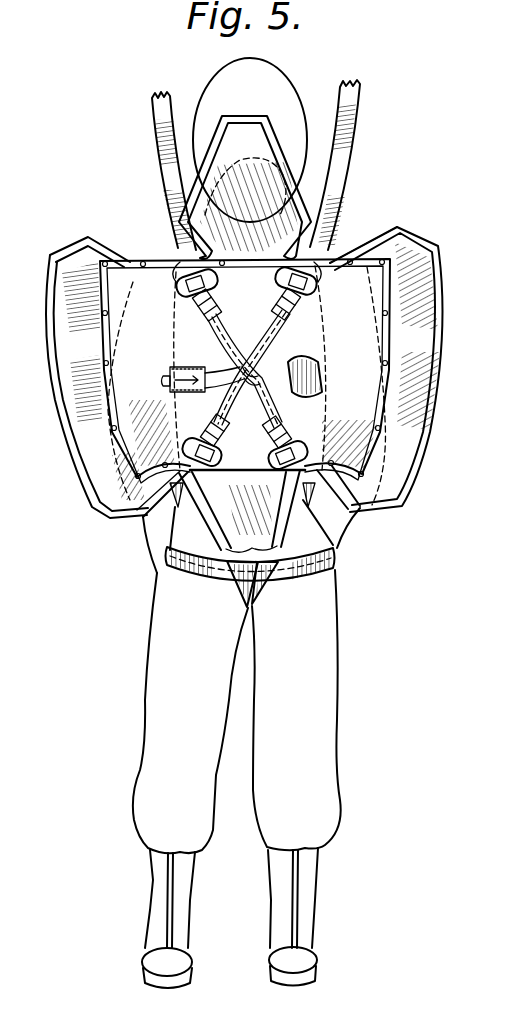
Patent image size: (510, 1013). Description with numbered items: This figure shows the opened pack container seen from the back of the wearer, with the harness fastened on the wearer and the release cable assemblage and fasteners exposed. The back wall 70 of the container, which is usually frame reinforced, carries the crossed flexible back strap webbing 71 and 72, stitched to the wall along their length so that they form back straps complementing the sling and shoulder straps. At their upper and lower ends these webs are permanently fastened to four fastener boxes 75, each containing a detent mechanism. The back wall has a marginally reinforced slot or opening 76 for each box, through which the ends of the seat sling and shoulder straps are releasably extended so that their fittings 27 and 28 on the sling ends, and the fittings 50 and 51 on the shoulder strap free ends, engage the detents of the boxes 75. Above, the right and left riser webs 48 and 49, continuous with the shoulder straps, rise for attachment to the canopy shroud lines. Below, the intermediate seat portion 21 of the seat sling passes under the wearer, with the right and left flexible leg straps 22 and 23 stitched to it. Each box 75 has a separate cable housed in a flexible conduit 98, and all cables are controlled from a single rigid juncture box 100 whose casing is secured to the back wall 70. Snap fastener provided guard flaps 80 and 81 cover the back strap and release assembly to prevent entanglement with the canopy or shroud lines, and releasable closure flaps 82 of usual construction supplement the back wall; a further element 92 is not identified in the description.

The intermediate seat portion 21 is at (298, 574).
The right flexible leg strap 22 is at (262, 596).
The left flexible leg strap 23 is at (240, 596).
The fitting 27 is at (270, 448).
The fitting 28 is at (213, 458).
The right riser web 48 is at (335, 176).
The left riser web 49 is at (160, 172).
The fitting 50 is at (310, 288).
The fitting 51 is at (214, 290).
The back wall 70 is at (320, 372).
The crossed flexible back strap webbing 71 is at (272, 341).
The crossed flexible back strap webbing 72 is at (230, 329).
The fastener box 75 is at (194, 304).
The marginally reinforced slot or opening 76 is at (178, 285).
The guard flap 80 is at (398, 230).
The guard flap 81 is at (118, 285).
The releasable closure flap 82 is at (250, 142).
The waist belt 92 is at (270, 573).
The flexible conduit 98 is at (256, 368).
The rigid juncture box 100 is at (168, 382).